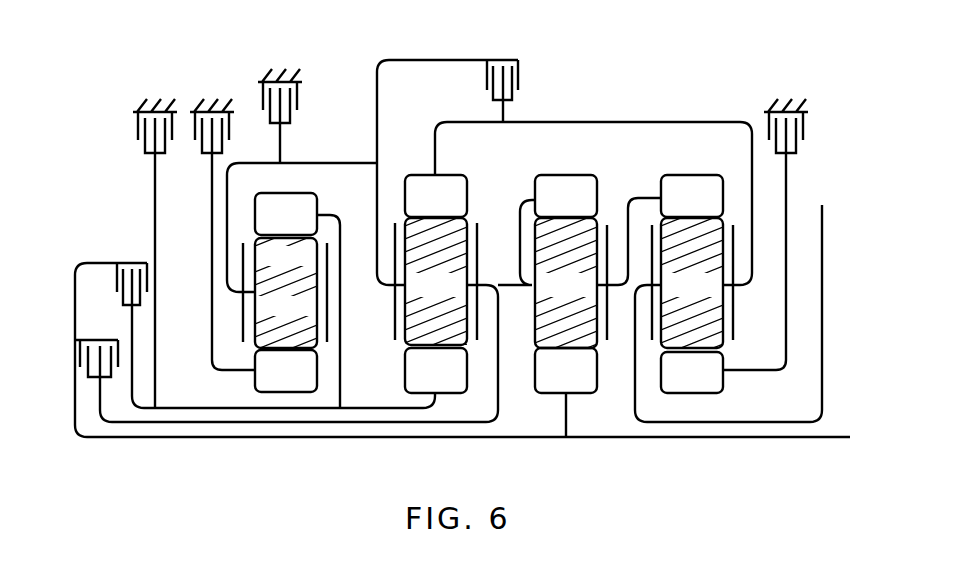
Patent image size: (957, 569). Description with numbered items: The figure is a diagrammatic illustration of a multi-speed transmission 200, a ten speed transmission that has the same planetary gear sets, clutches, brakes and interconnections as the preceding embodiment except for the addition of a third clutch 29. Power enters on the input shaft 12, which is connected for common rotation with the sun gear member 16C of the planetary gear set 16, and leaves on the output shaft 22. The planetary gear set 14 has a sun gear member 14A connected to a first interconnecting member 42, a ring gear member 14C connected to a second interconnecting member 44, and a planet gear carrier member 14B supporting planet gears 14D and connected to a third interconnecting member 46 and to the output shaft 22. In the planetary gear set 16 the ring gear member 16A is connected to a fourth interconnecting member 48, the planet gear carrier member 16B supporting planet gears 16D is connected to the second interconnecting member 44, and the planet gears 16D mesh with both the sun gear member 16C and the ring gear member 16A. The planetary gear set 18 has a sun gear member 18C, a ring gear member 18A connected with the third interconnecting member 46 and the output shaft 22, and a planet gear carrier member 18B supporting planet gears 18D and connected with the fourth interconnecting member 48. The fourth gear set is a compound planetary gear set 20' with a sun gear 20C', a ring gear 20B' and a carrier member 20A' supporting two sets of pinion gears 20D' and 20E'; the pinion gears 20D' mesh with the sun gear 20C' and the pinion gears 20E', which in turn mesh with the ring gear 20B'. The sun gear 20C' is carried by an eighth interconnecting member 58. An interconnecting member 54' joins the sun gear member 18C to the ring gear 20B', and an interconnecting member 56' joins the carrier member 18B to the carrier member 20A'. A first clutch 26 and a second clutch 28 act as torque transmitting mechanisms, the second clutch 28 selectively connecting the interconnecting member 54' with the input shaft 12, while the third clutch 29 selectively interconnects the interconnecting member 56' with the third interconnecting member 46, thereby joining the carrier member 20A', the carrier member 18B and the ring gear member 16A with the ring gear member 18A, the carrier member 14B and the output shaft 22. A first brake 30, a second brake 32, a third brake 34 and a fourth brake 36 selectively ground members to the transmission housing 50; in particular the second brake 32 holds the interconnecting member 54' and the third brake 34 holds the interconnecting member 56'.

The input shaft 12 is at (822, 438).
The output shaft 22 is at (822, 237).
The planetary gear set 14 is at (705, 329).
The sun gear member 14A is at (672, 385).
The planet gear carrier member 14B is at (733, 320).
The ring gear member 14C is at (672, 208).
The planet gears 14D is at (672, 297).
The planetary gear set 16 is at (598, 323).
The ring gear member 16A is at (546, 208).
The planet gear carrier member 16B is at (620, 227).
The sun gear member 16C is at (546, 383).
The planet gears 16D is at (546, 297).
The planetary gear set 18 is at (436, 325).
The ring gear member 18A is at (416, 208).
The planet gear carrier member 18B is at (395, 308).
The sun gear member 18C is at (416, 383).
The planet gears 18D is at (416, 297).
The compound planetary gear set 20' is at (257, 338).
The carrier member 20A' is at (251, 322).
The ring gear 20B' is at (297, 300).
The sun gear 20C' is at (286, 371).
The pinion gears 20D' is at (286, 306).
The pinion gears 20E' is at (286, 298).
The first clutch 26 is at (86, 360).
The second clutch 28 is at (117, 276).
The third clutch 29 is at (487, 82).
The first brake 30 is at (195, 128).
The second brake 32 is at (137, 134).
The third brake 34 is at (298, 100).
The fourth brake 36 is at (803, 130).
The first interconnecting member 42 is at (787, 277).
The second interconnecting member 44 is at (609, 284).
The third interconnecting member 46 is at (576, 122).
The fourth interconnecting member 48 is at (503, 390).
The transmission housing 50 is at (140, 103).
The interconnecting member 54' is at (118, 263).
The interconnecting member 56' is at (447, 149).
The eighth interconnecting member 58 is at (210, 250).
The transmission 200 is at (682, 84).